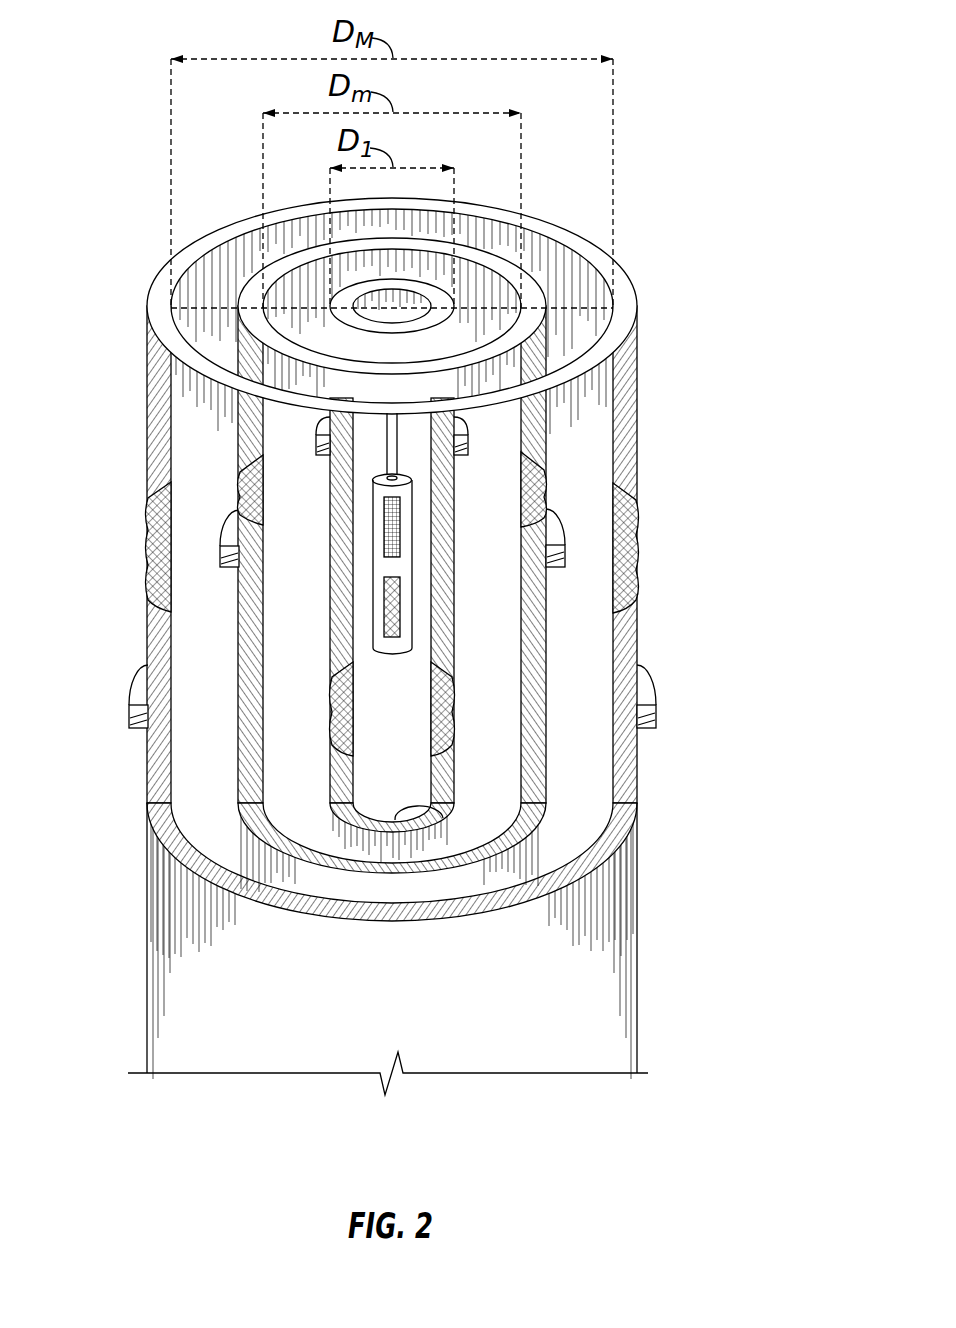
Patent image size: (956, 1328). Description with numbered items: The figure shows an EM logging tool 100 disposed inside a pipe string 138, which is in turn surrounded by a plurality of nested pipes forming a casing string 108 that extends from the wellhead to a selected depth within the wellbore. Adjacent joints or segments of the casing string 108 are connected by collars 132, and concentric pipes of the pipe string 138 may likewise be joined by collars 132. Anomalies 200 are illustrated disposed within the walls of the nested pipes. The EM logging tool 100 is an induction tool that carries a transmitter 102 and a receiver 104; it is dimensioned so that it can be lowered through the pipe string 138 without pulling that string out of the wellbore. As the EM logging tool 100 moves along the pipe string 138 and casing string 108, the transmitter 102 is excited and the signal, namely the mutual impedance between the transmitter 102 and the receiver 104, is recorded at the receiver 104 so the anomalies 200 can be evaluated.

The EM logging tool 100 is at (400, 565).
The transmitter 102 is at (393, 518).
The receiver 104 is at (393, 617).
The casing string 108 is at (748, 618).
The collar 132 is at (220, 558).
The pipe string 138 is at (442, 812).
The anomalies 200 is at (248, 471).